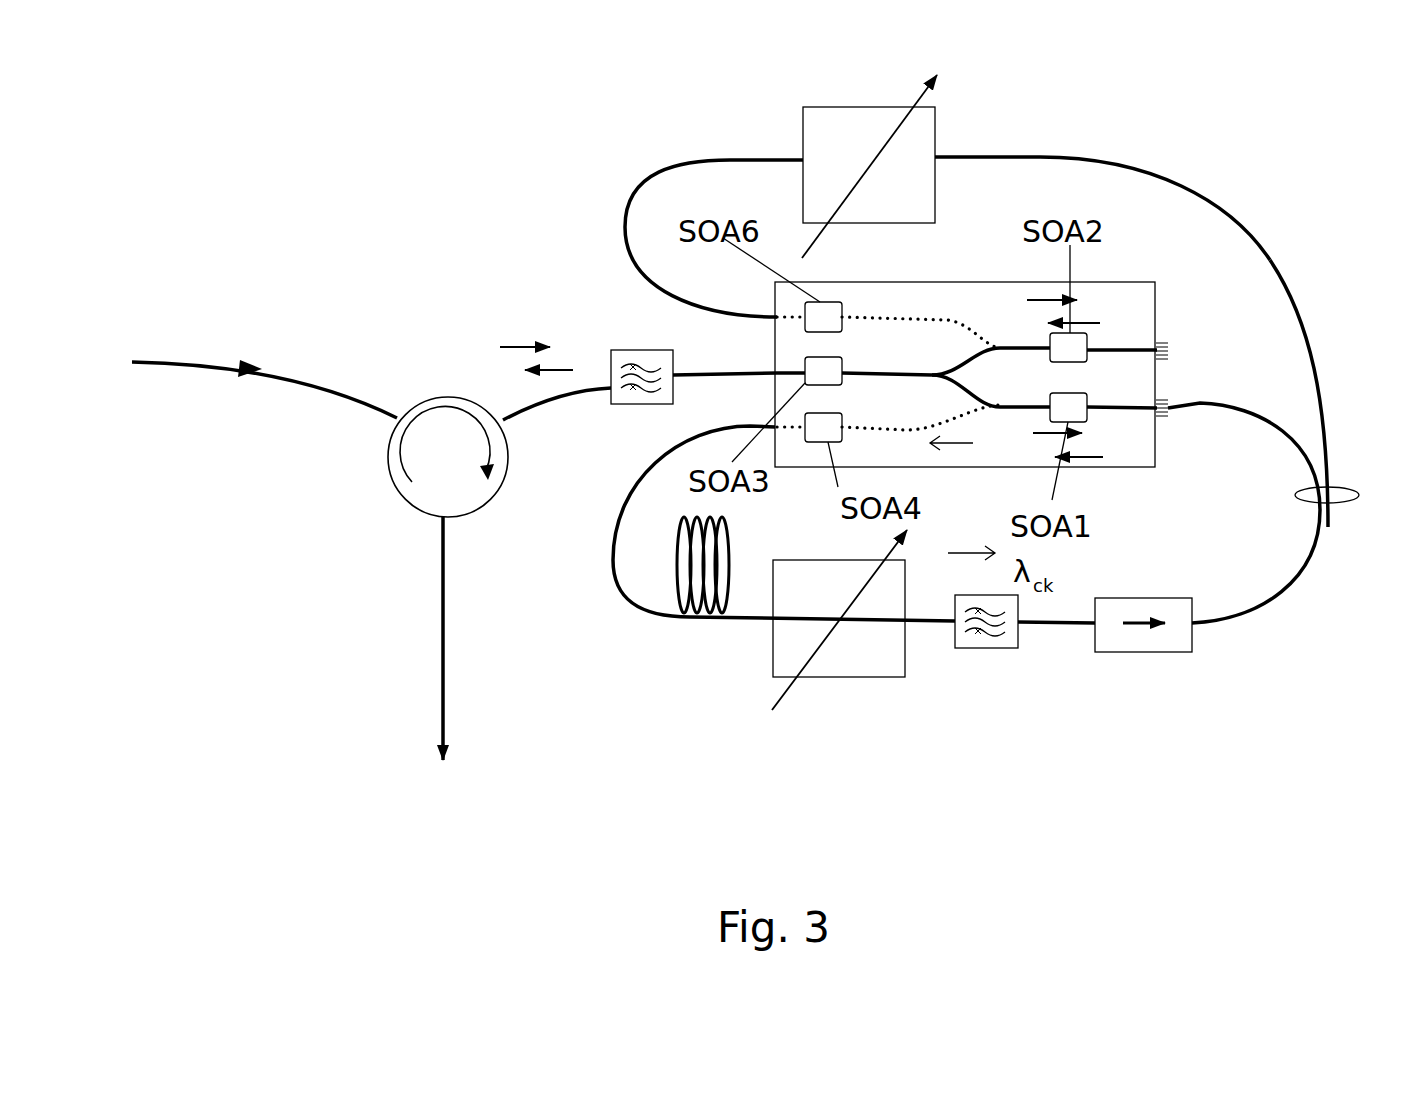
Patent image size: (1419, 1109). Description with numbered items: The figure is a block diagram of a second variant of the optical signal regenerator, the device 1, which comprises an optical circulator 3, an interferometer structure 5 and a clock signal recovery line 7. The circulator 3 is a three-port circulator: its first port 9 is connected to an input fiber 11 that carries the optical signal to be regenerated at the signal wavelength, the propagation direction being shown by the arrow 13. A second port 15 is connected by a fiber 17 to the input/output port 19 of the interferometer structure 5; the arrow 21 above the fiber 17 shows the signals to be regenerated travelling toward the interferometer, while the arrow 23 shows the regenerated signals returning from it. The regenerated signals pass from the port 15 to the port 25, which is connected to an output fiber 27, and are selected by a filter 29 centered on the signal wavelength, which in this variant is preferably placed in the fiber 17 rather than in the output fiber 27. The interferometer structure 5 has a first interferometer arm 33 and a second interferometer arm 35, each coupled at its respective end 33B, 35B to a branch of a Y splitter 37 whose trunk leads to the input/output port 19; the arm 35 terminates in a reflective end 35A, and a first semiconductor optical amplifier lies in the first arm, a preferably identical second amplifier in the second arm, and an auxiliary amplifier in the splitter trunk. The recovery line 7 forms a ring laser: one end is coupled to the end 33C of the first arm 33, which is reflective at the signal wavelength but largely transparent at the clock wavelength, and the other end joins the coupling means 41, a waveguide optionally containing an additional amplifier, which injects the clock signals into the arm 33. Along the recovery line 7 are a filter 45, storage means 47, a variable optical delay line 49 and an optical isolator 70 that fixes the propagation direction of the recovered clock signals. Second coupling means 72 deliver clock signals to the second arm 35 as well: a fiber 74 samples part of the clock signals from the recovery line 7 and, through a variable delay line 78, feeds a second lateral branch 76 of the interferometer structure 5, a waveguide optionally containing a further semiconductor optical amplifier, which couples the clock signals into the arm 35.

The device 1 is at (417, 368).
The optical circulator 3 is at (448, 397).
The interferometer structure 5 is at (962, 273).
The clock signal recovery line 7 is at (1247, 618).
The first port 9 is at (390, 448).
The input fiber 11 is at (318, 390).
The arrow 13 is at (243, 373).
The second port 15 is at (503, 427).
The fiber 17 is at (697, 375).
The input/output port 19 is at (765, 370).
The arrow 21 is at (508, 348).
The arrow 23 is at (551, 370).
The port 25 is at (445, 518).
The output fiber 27 is at (445, 627).
The filter 29 is at (637, 407).
The first interferometer arm 33 is at (1110, 407).
The end of first arm 33B is at (957, 390).
The end of first arm 33C is at (1165, 415).
The second interferometer arm 35 is at (1110, 348).
The reflective end 35A is at (1168, 350).
The end of second arm 35B is at (977, 357).
The Y splitter 37 is at (845, 373).
The coupling means 41 is at (907, 432).
The filter 45 is at (987, 650).
The storage means 47 is at (728, 517).
The variable optical delay line 49 is at (835, 677).
The optical isolator 70 is at (1123, 652).
The second coupling means 72 is at (1048, 152).
The fiber 74 is at (1210, 212).
The second lateral branch 76 is at (863, 317).
The variable delay line 78 is at (803, 119).